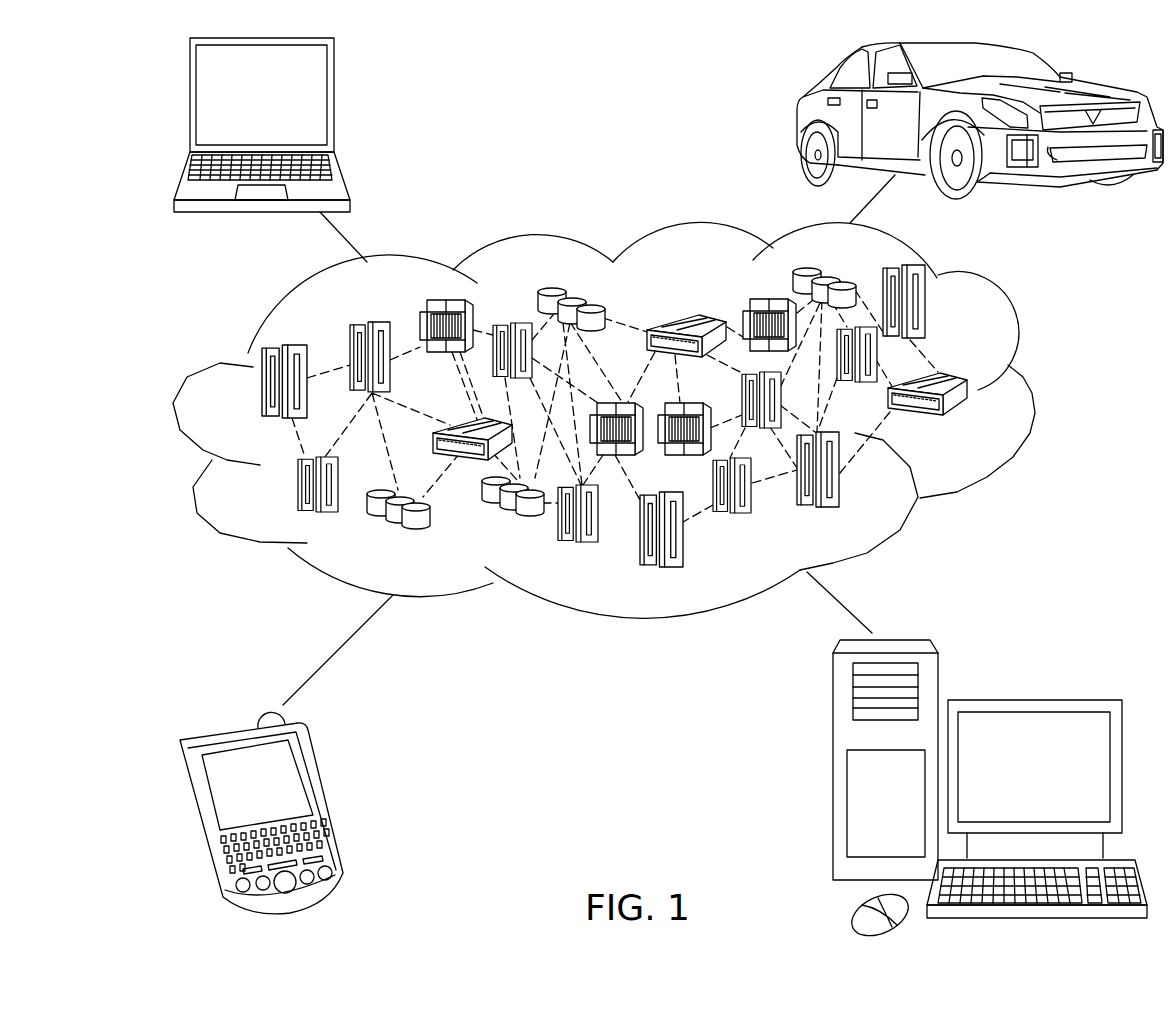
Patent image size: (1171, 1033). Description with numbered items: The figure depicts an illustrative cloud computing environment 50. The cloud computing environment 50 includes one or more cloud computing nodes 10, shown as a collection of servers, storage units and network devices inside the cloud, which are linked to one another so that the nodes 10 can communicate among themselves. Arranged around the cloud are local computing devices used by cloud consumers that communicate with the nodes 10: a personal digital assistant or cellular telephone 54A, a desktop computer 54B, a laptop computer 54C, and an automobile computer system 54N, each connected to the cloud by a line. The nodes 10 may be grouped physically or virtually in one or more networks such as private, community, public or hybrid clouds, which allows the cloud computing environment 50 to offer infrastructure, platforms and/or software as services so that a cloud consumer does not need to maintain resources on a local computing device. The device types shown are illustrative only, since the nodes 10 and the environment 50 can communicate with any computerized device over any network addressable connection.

The cloud computing environment 50 is at (1027, 390).
The cloud computing nodes 10 is at (675, 416).
The personal digital assistant (PDA) or cellular telephone 54A is at (323, 797).
The desktop computer 54B is at (1030, 700).
The laptop computer 54C is at (335, 102).
The automobile computer system 54N is at (800, 120).